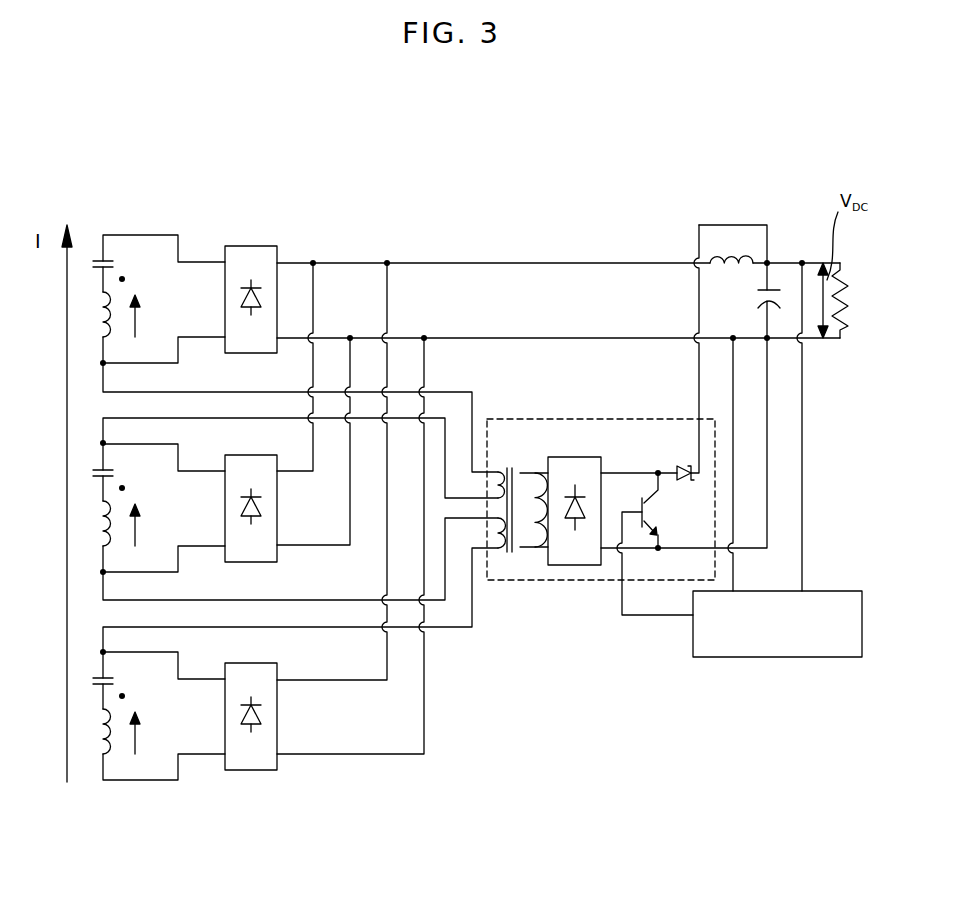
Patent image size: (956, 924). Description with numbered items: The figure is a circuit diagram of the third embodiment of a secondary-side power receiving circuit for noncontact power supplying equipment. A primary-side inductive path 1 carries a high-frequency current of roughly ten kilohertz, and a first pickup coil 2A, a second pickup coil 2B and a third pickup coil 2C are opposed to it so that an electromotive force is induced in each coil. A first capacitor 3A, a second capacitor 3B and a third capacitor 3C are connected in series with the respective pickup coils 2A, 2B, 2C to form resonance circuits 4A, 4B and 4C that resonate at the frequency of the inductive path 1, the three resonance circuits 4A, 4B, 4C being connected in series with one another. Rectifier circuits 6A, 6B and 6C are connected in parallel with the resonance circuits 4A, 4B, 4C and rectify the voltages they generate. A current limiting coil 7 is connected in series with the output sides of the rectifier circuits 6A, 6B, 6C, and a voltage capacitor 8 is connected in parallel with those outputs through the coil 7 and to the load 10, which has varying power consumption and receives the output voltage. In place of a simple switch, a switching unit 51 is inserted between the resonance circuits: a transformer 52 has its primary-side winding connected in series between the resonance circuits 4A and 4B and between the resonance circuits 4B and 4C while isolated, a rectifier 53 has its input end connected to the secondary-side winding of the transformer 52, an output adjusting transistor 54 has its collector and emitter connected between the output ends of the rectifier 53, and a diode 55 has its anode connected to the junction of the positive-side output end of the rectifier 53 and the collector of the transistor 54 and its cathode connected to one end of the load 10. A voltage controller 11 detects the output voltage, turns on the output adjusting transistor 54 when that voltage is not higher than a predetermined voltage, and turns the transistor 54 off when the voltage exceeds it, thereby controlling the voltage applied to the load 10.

The primary-side inductive path 1 is at (65, 396).
The first pickup coil 2A is at (117, 341).
The second pickup coil 2B is at (117, 550).
The third pickup coil 2C is at (117, 759).
The first capacitor 3A is at (114, 262).
The second capacitor 3B is at (114, 471).
The third capacitor 3C is at (114, 680).
The resonance circuit 4A is at (95, 316).
The resonance circuit 4B is at (90, 490).
The resonance circuit 4C is at (90, 697).
The rectifier circuit 6A is at (251, 246).
The rectifier circuit 6B is at (250, 455).
The rectifier circuit 6C is at (253, 663).
The current limiting coil 7 is at (735, 254).
The voltage capacitor 8 is at (759, 299).
The load 10 is at (850, 304).
The voltage controller 11 is at (831, 657).
The switching unit 51 is at (594, 580).
The transformer 52 is at (540, 548).
The rectifier 53 is at (568, 457).
The output adjusting transistor 54 is at (641, 498).
The diode 55 is at (688, 482).